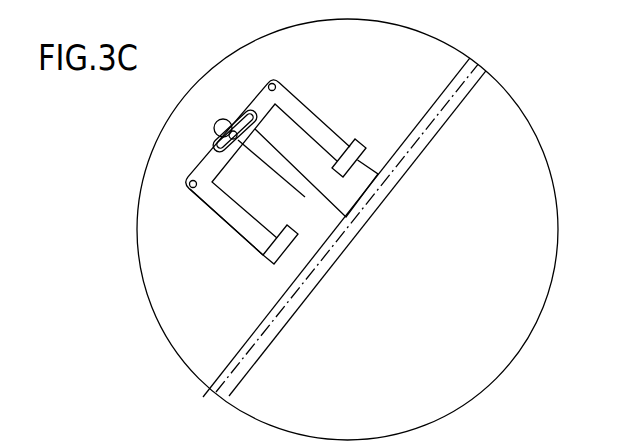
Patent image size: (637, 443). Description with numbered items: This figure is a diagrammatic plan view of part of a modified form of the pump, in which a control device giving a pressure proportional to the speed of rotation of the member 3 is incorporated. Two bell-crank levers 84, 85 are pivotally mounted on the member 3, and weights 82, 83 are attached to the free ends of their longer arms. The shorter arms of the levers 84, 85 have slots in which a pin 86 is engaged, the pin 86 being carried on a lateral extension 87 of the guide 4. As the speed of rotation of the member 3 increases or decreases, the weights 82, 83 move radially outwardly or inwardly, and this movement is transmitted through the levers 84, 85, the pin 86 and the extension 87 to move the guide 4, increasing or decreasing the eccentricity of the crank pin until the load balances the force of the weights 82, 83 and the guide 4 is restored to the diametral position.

The member 3 is at (522, 149).
The guide 4 is at (432, 142).
The weight 82 is at (277, 254).
The weight 83 is at (362, 150).
The bell-crank lever 84 is at (218, 200).
The bell-crank lever 85 is at (297, 108).
The pin 86 is at (232, 124).
The lateral extension 87 is at (272, 169).